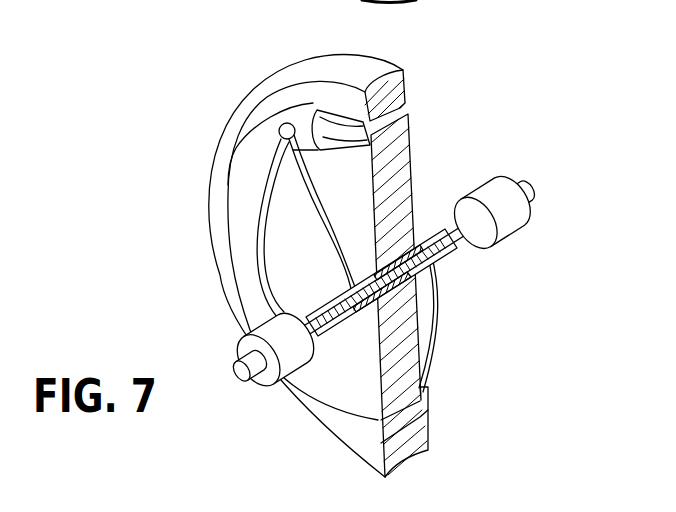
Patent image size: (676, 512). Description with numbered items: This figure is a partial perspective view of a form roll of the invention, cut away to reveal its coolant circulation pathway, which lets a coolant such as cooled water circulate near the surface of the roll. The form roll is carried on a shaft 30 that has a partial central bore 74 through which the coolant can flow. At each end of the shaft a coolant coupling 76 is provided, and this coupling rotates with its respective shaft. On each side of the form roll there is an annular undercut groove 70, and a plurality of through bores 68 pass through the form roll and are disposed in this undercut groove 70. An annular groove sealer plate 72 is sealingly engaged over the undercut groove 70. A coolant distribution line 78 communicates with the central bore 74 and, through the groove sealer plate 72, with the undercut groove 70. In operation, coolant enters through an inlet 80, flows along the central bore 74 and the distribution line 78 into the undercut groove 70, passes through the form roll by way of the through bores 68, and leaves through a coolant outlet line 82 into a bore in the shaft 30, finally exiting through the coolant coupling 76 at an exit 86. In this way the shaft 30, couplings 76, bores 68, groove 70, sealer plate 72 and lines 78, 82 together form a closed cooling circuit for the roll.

The shaft 30 is at (345, 306).
The through bores 68 is at (405, 117).
The annular undercut groove 70 is at (322, 112).
The annular groove sealer plate 72 is at (230, 177).
The partial central bore 74 is at (345, 300).
The coolant coupling 76 is at (493, 186).
The coolant distribution line 78 is at (293, 240).
The inlet 80 is at (242, 378).
The coolant outlet line 82 is at (438, 313).
The exit 86 is at (535, 186).